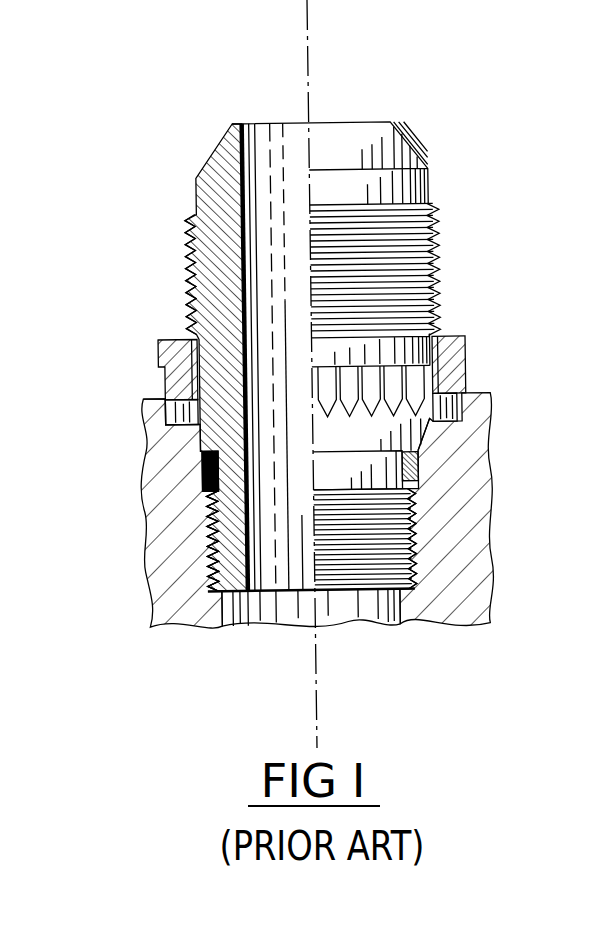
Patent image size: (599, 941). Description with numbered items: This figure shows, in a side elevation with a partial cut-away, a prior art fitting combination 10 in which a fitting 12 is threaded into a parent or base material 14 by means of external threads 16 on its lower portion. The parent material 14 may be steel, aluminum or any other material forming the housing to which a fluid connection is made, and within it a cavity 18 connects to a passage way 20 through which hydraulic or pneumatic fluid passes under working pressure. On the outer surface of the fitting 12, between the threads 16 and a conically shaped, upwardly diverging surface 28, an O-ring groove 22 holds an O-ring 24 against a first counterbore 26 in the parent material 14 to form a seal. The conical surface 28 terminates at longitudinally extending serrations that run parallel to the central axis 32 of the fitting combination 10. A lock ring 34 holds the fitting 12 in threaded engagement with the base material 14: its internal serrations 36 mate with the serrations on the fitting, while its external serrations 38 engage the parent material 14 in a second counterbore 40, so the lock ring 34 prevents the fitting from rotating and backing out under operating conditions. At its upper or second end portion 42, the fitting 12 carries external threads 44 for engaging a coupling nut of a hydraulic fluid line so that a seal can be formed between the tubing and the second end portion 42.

The fitting combination 10 is at (155, 264).
The fitting 12 is at (208, 152).
The parent or base material 14 is at (160, 600).
The external threads 16 is at (420, 545).
The cavity 18 is at (375, 598).
The passage way 20 is at (270, 616).
The O-ring groove 22 is at (412, 492).
The O-ring 24 is at (420, 468).
The first counterbore 26 is at (208, 470).
The conically shaped, upwardly diverging surface 28 is at (425, 440).
The central axis 32 is at (308, 57).
The lock ring 34 is at (466, 329).
The internal serrations 36 is at (190, 365).
The external serrations 38 is at (160, 345).
The second counterbore 40 is at (163, 425).
The upper or second end portion 42 is at (462, 232).
The external threads 44 is at (442, 265).